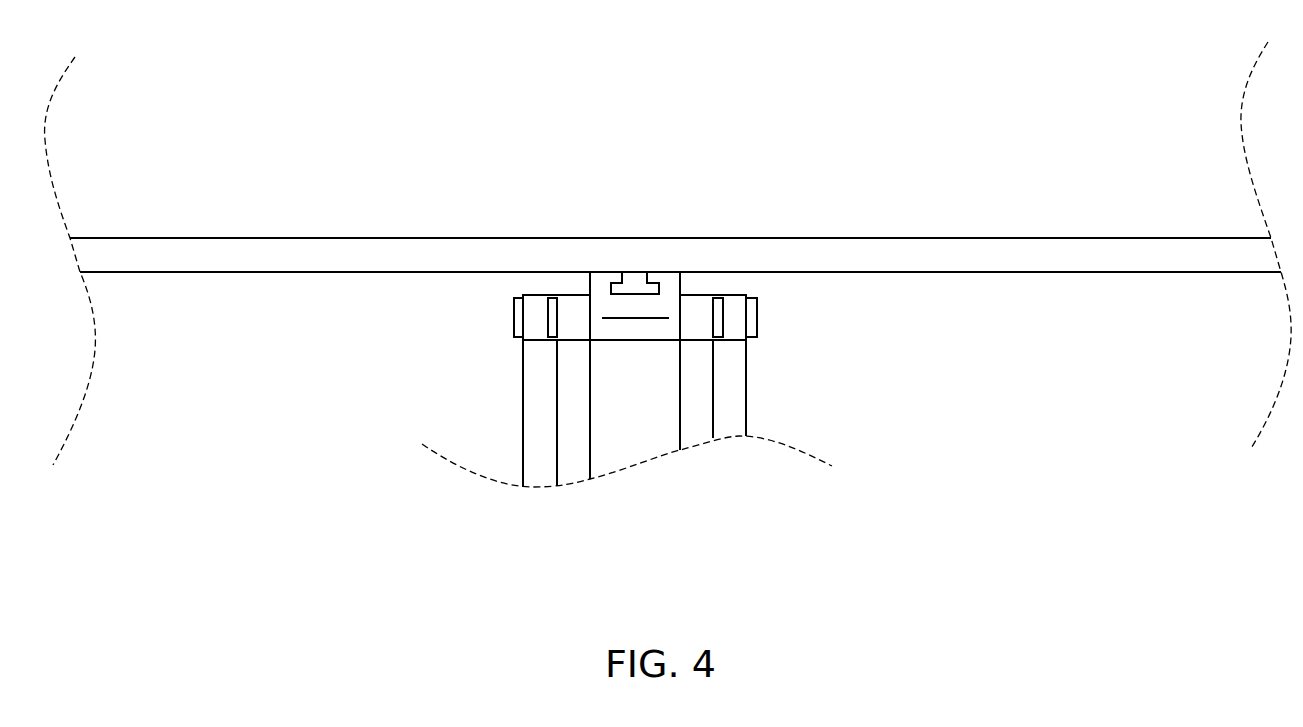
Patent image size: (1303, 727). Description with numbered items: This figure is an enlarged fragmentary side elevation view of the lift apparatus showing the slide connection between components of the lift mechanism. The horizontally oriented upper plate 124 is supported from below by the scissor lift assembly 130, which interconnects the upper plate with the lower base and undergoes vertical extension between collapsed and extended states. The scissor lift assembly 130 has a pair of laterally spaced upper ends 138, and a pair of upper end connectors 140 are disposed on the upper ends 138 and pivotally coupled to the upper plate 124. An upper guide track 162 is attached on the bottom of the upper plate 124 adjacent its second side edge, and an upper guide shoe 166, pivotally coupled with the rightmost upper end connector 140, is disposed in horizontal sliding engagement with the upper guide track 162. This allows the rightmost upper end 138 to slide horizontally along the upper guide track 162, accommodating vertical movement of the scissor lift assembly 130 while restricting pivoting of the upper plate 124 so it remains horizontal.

The upper plate 124 is at (819, 232).
The scissor lift assembly 130 is at (752, 424).
The upper ends 138 is at (570, 333).
The upper end connectors 140 is at (722, 312).
The upper guide track 162 is at (630, 282).
The upper guide shoe 166 is at (608, 282).